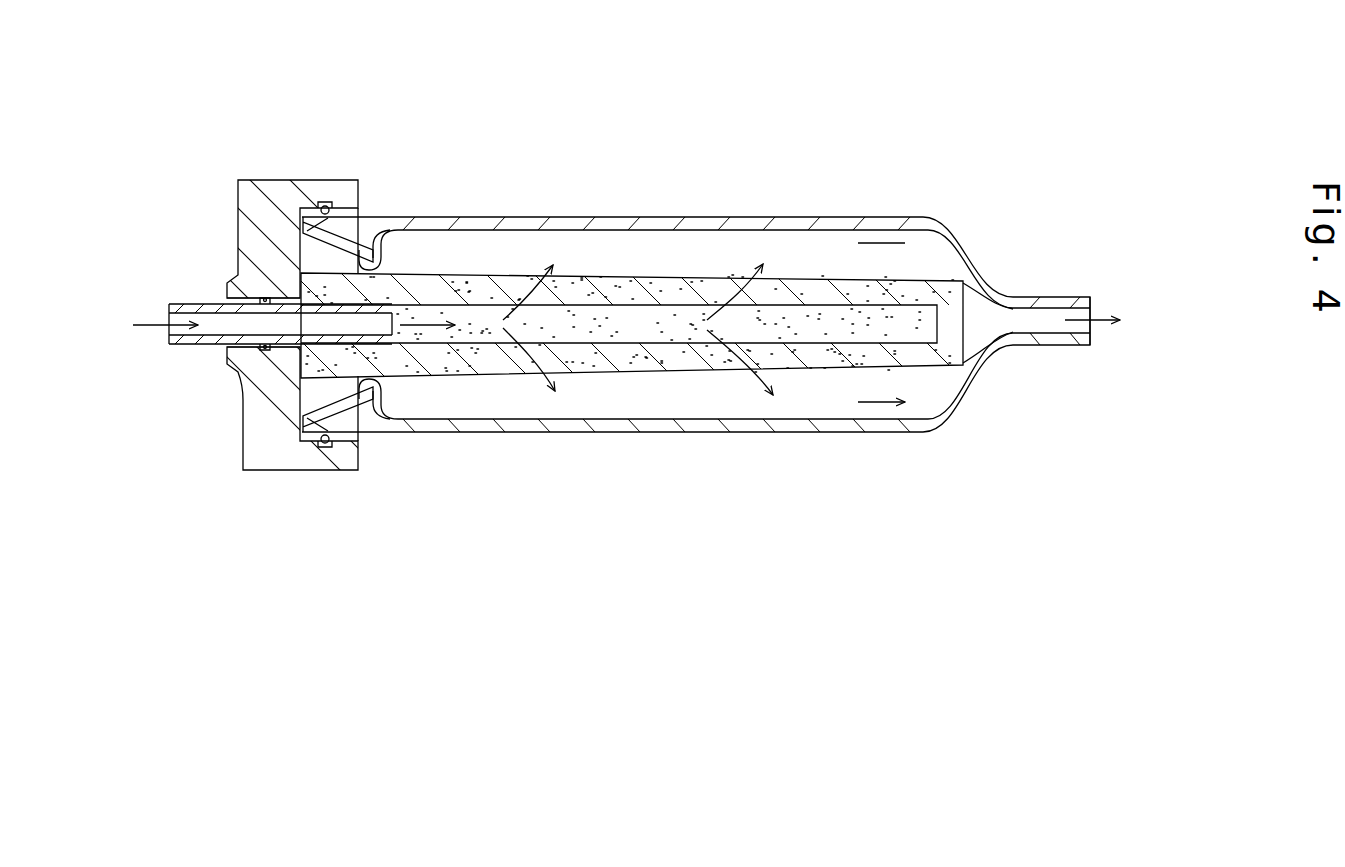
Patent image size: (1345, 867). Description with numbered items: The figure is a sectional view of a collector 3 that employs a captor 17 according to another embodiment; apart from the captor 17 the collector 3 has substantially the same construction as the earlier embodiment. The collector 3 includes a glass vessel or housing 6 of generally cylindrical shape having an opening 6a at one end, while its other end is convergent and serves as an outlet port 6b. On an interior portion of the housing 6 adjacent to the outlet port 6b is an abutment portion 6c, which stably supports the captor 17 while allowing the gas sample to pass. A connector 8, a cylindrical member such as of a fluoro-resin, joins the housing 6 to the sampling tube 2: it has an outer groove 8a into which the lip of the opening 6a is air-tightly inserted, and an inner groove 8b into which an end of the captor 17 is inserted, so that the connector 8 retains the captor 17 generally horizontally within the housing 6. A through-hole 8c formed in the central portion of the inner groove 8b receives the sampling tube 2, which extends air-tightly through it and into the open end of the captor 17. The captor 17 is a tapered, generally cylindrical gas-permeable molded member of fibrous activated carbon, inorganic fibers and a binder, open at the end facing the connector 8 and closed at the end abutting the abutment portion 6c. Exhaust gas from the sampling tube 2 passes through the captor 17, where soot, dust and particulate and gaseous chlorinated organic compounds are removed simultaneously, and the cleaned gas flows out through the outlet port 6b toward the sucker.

The sampling tube 2 is at (200, 303).
The collector 3 is at (626, 200).
The housing 6 is at (840, 228).
The opening 6a is at (378, 230).
The outlet port 6b is at (1048, 325).
The abutment portion 6c is at (978, 275).
The connector 8 is at (263, 188).
The outer groove 8a is at (360, 215).
The inner groove 8b is at (313, 363).
The through-hole 8c is at (232, 326).
The captor 17 is at (725, 390).